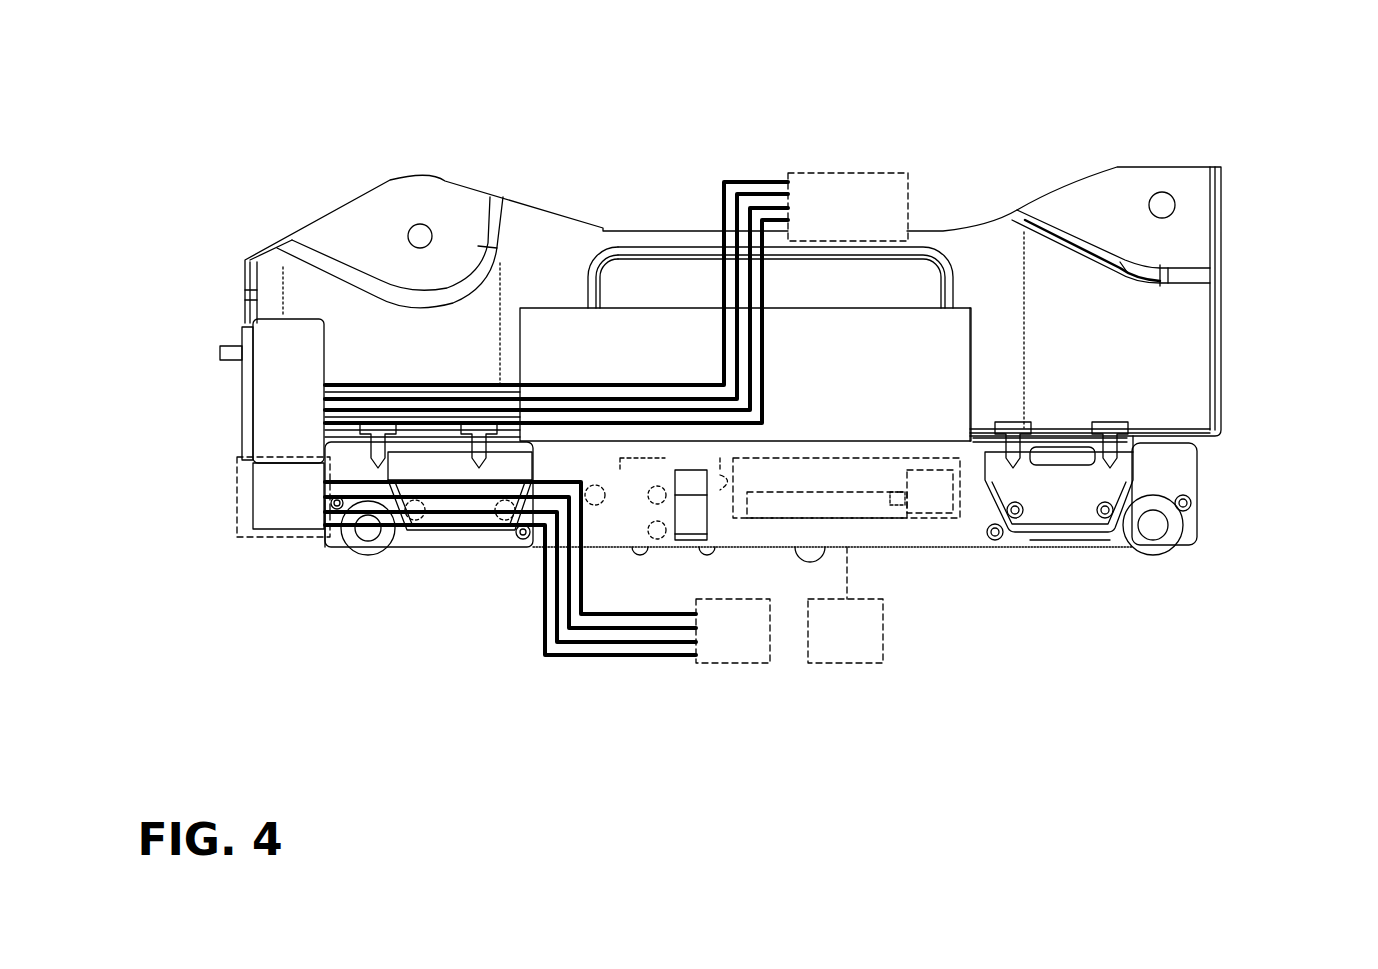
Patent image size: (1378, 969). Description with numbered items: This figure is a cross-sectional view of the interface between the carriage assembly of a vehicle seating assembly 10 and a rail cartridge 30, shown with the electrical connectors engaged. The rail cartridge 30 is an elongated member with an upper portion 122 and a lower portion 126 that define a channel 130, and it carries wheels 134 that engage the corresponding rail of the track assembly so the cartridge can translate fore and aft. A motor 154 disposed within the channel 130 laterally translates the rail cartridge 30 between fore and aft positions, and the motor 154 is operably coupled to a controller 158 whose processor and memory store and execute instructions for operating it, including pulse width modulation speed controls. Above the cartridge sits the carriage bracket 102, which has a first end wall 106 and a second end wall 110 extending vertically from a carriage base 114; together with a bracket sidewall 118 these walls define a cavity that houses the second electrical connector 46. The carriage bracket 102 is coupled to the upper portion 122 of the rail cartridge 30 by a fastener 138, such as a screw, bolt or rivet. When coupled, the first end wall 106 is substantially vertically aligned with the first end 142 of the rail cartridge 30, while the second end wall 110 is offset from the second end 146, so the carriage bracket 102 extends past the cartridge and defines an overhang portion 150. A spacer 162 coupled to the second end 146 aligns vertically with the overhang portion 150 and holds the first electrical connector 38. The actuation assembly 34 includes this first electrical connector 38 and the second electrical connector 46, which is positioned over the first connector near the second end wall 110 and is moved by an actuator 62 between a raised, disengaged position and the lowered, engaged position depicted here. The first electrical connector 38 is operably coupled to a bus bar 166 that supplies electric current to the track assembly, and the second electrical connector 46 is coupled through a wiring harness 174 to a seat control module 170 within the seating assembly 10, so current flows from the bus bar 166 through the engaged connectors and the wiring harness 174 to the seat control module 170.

The seating assembly 10 is at (1252, 166).
The rail cartridge 30 is at (1200, 508).
The actuation assembly 34 is at (238, 386).
The first electrical connector 38 is at (277, 517).
The second electrical connector 46 is at (268, 410).
The actuator 62 is at (217, 349).
The carriage bracket 102 is at (1156, 190).
The first end wall 106 is at (1222, 318).
The second end wall 110 is at (245, 285).
The carriage base 114 is at (1203, 440).
The bracket sidewall 118 is at (1062, 200).
The upper portion 122 is at (1172, 456).
The lower portion 126 is at (1112, 540).
The channel 130 is at (1010, 530).
The wheels 134 is at (365, 545).
The fastener 138 is at (478, 435).
The first end 142 is at (1197, 480).
The second end 146 is at (325, 535).
The overhang portion 150 is at (333, 372).
The motor 154 is at (903, 540).
The controller 158 is at (822, 665).
The spacer 162 is at (237, 483).
The bus bar 166 is at (742, 665).
The seat control module 170 is at (828, 173).
The wiring harness 174 is at (543, 383).